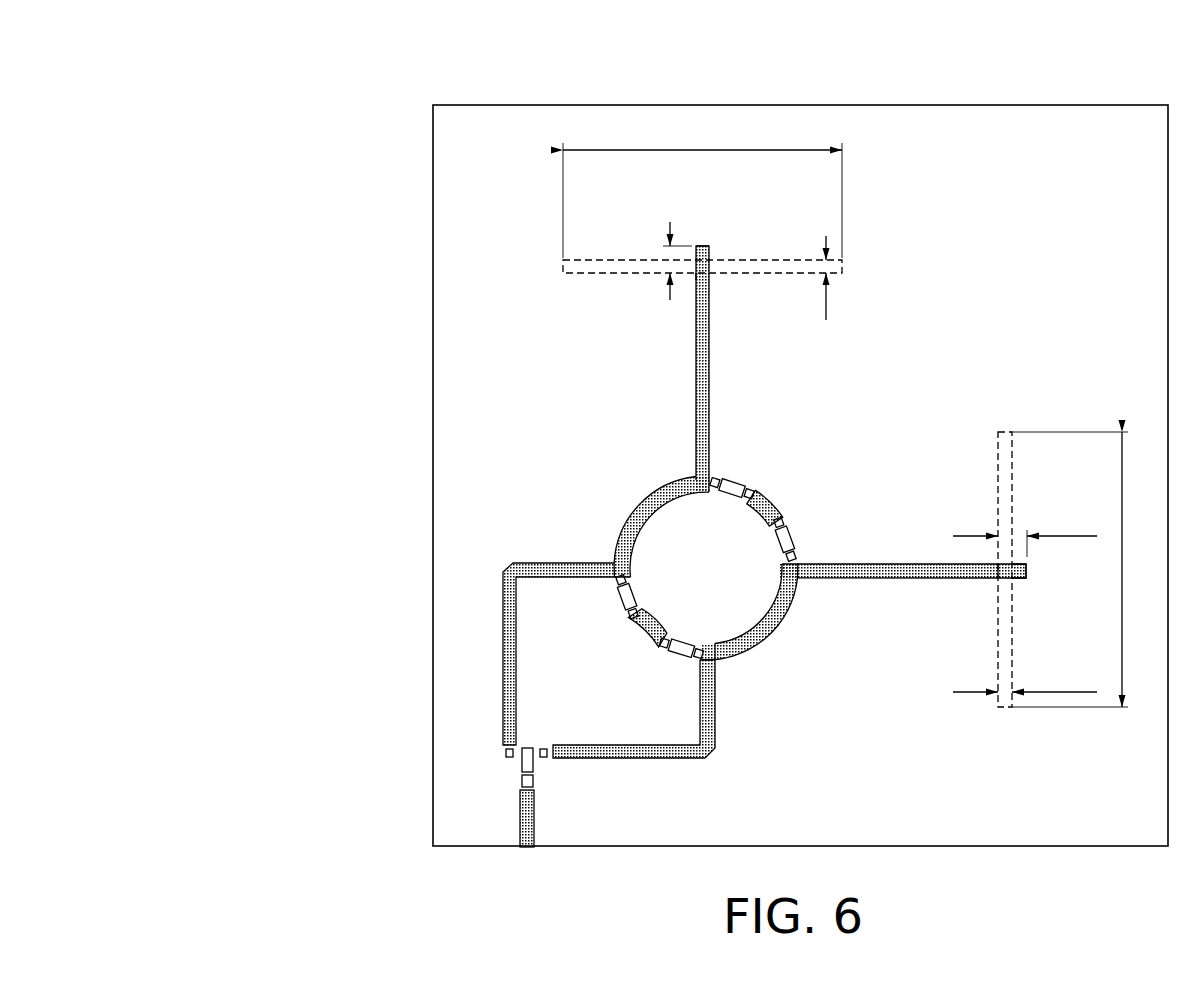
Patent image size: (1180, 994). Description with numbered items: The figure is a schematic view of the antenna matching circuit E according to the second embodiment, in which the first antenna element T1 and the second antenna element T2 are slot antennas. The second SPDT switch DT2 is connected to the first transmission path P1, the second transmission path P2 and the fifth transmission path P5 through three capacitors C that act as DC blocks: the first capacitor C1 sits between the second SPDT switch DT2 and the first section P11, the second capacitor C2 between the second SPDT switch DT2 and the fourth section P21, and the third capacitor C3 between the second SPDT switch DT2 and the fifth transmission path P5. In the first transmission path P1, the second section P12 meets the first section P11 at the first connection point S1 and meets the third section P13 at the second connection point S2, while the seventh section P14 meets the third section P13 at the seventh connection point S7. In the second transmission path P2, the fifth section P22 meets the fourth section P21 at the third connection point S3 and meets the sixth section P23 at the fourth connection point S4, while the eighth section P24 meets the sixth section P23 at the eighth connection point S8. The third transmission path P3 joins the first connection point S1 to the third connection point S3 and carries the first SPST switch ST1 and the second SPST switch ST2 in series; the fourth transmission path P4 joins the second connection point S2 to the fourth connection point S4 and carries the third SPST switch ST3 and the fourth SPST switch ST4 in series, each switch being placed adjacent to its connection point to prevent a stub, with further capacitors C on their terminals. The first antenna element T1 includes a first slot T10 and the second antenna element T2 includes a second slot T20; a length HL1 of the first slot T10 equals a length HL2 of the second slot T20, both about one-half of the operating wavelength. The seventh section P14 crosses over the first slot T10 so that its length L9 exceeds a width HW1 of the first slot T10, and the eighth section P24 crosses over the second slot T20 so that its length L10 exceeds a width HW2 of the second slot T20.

The antenna matching circuit E is at (343, 82).
The first transmission path P1 is at (115, 157).
The second transmission path P2 is at (115, 333).
The first section P11 is at (652, 759).
The second section P12 is at (771, 631).
The third section P13 is at (922, 564).
The seventh section P14 is at (1020, 580).
The fourth section P21 is at (503, 618).
The fifth section P22 is at (651, 506).
The sixth section P23 is at (696, 352).
The eighth section P24 is at (706, 250).
The third transmission path P3 is at (641, 632).
The fourth transmission path P4 is at (762, 502).
The fifth transmission path P5 is at (534, 822).
The first connection point S1 is at (720, 656).
The second connection point S2 is at (797, 585).
The third connection point S3 is at (613, 563).
The fourth connection point S4 is at (692, 478).
The seventh connection point S7 is at (1000, 580).
The eighth connection point S8 is at (708, 278).
The first SPST switch ST1 is at (612, 597).
The second SPST switch ST2 is at (676, 660).
The third SPST switch ST3 is at (800, 538).
The fourth SPST switch ST4 is at (736, 478).
The capacitor C is at (740, 503).
The first capacitor C1 is at (545, 749).
The second capacitor C2 is at (505, 752).
The third capacitor C3 is at (534, 781).
The second SPDT switch DT2 is at (521, 766).
The first antenna element T1 is at (1022, 720).
The second antenna element T2 is at (858, 248).
The first slot T10 is at (1010, 649).
The second slot T20 is at (781, 262).
The length of the first slot HL1 is at (1089, 569).
The length of the second slot HL2 is at (702, 187).
The width of the first slot HW1 is at (1025, 674).
The width of the second slot HW2 is at (803, 252).
The length of the seventh section L9 is at (1025, 529).
The length of the eighth section L10 is at (657, 237).